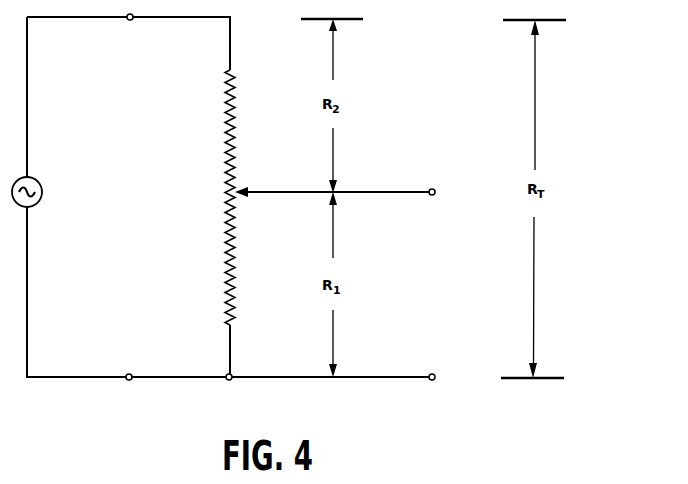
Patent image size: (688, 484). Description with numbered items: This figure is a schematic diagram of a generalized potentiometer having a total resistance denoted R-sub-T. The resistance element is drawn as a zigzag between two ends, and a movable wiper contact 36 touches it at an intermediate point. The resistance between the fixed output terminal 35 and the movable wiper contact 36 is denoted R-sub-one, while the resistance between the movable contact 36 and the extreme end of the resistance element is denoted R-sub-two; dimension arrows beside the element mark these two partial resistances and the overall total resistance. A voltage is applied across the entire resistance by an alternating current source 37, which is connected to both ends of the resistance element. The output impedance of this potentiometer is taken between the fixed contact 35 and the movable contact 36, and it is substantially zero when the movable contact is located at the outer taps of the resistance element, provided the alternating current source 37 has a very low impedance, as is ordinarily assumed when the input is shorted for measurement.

The fixed output terminal 35 is at (433, 373).
The movable wiper contact 36 is at (433, 188).
The alternating current source 37 is at (38, 181).